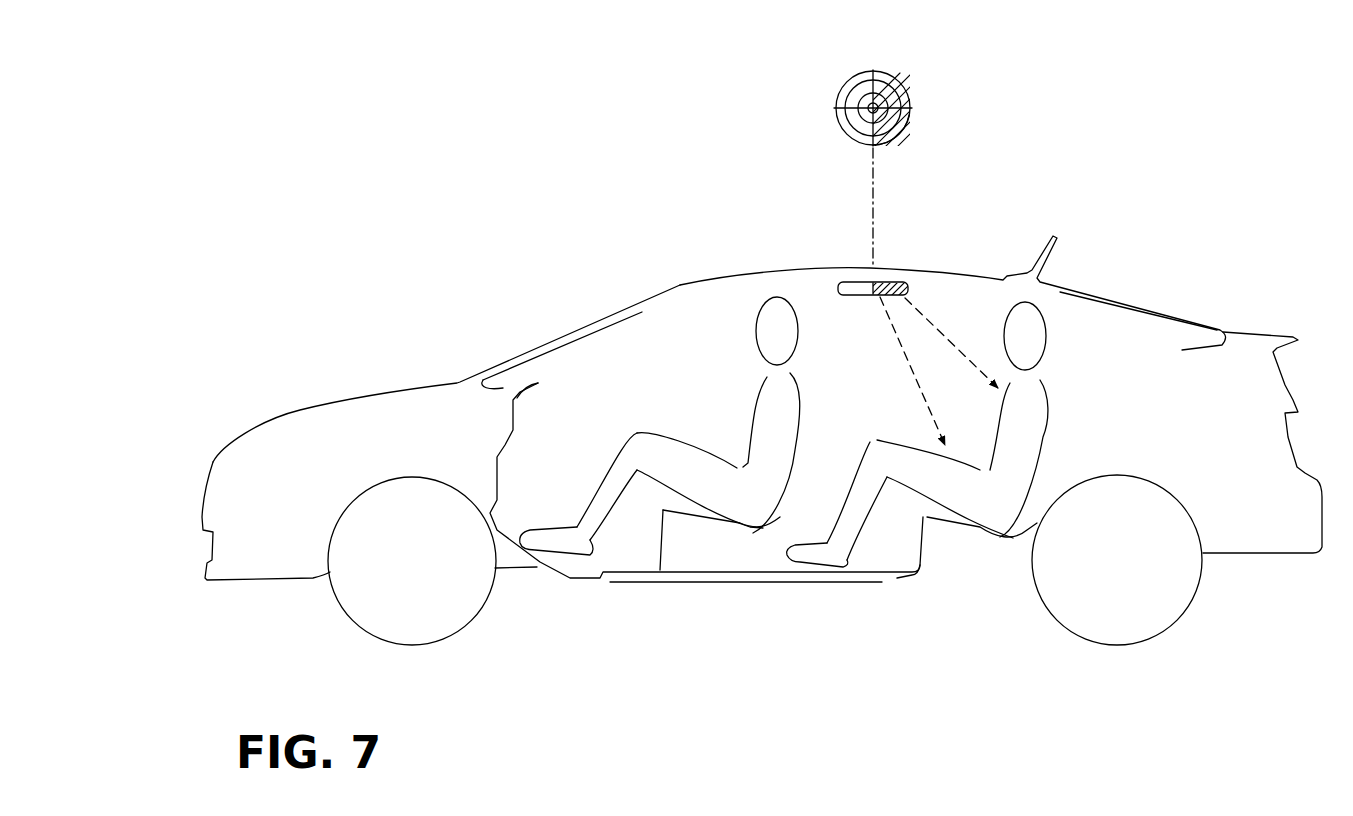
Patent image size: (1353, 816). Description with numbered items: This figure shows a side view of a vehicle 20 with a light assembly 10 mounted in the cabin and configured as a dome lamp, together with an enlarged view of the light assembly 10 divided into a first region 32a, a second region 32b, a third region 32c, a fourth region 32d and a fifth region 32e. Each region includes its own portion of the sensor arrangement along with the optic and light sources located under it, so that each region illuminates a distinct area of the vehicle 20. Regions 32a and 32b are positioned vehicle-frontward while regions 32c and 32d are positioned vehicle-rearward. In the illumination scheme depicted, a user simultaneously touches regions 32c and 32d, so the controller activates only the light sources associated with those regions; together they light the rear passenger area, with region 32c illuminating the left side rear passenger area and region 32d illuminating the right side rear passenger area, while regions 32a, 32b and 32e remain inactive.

The light assembly 10 is at (836, 91).
The vehicle 20 is at (592, 320).
The first region 32a is at (857, 127).
The second region 32b is at (858, 90).
The third region 32c is at (892, 85).
The fourth region 32d is at (895, 138).
The fifth region 32e is at (908, 100).